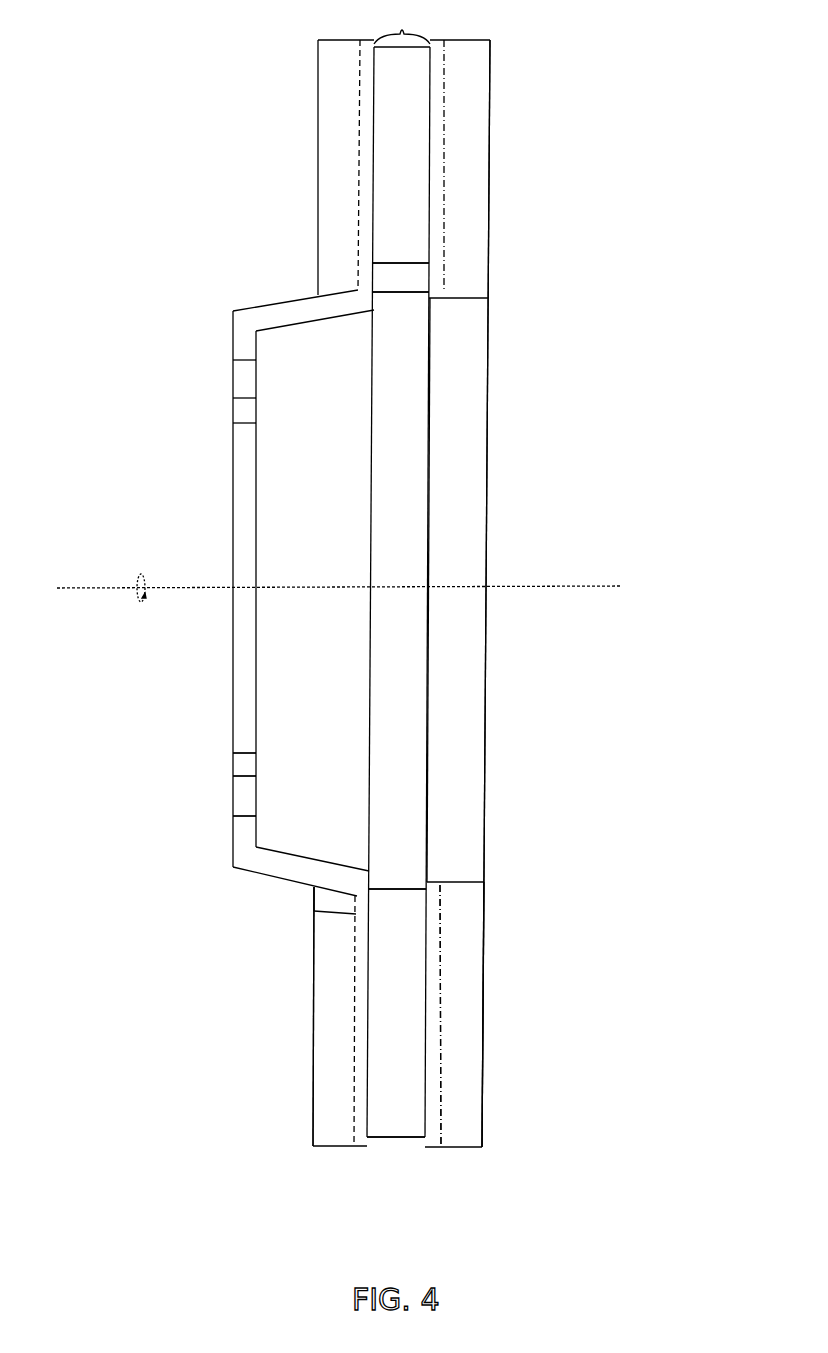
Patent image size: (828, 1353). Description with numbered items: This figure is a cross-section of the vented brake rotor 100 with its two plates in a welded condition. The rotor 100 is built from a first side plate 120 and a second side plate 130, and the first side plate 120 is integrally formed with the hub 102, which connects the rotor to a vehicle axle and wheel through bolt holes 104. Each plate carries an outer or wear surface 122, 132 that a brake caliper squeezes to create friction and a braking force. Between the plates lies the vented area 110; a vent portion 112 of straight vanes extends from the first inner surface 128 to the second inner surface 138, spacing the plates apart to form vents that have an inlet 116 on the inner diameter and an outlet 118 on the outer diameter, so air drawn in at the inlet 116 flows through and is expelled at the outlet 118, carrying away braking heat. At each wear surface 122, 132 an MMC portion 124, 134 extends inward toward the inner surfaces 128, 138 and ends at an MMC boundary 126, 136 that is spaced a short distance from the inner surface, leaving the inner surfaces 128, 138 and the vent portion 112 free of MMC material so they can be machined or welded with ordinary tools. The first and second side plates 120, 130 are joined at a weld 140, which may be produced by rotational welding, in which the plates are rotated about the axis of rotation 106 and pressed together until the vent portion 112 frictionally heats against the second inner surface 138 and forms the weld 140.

The vented brake rotor 100 is at (625, 128).
The hub 102 is at (232, 465).
The bolt holes 104 is at (240, 805).
The axis of rotation 106 is at (545, 589).
The vented area 110 is at (404, 23).
The vent portion 112 is at (407, 188).
The inlet 116 is at (395, 876).
The outlet 118 is at (393, 1146).
The first side plate 120 is at (199, 254).
The outer or wear surface 122 is at (300, 993).
The MMC portion 124 is at (310, 1080).
The MMC boundary 126 is at (317, 907).
The inner surface 128 is at (429, 263).
The second side plate 130 is at (581, 239).
The outer or wear surface 132 is at (483, 993).
The MMC portion 134 is at (468, 1078).
The MMC boundary 136 is at (440, 908).
The inner surface 138 is at (429, 248).
The weld 140 is at (431, 414).